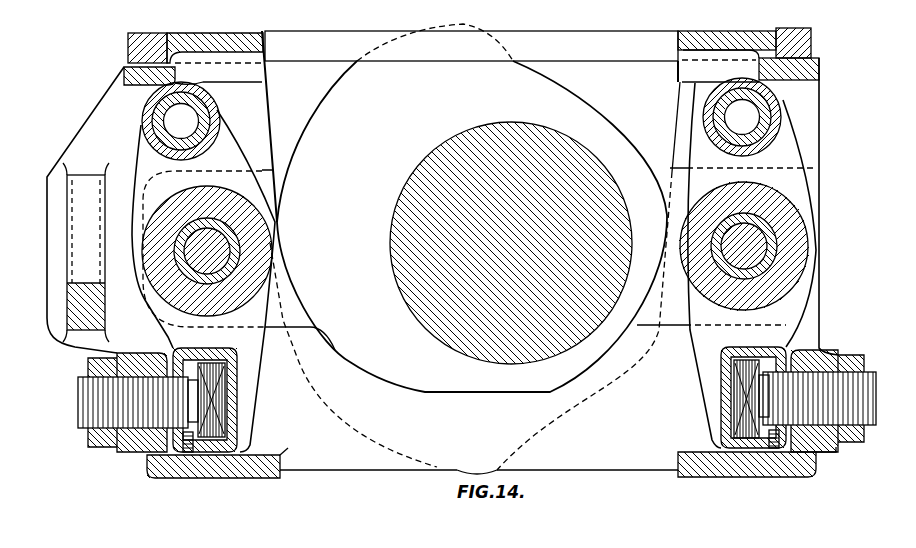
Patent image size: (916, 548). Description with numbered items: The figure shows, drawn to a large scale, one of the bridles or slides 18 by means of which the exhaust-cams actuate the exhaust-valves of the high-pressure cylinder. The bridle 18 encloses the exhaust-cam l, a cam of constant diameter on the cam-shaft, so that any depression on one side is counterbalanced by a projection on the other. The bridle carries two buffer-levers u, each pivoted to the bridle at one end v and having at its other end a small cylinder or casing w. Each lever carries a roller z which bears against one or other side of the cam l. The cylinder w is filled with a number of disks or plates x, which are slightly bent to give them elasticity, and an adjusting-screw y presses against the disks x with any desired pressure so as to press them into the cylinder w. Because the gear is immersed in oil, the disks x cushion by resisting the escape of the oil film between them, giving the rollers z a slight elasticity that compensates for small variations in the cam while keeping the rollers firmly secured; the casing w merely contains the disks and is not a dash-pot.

The bridle or slide 18 is at (442, 251).
The buffer-lever u is at (143, 160).
The pivot v is at (177, 112).
The roller z is at (243, 217).
The exhaust-cam l is at (365, 168).
The cylinder or casing w is at (237, 354).
The disks or plates x is at (238, 373).
The adjusting-screw y is at (97, 403).